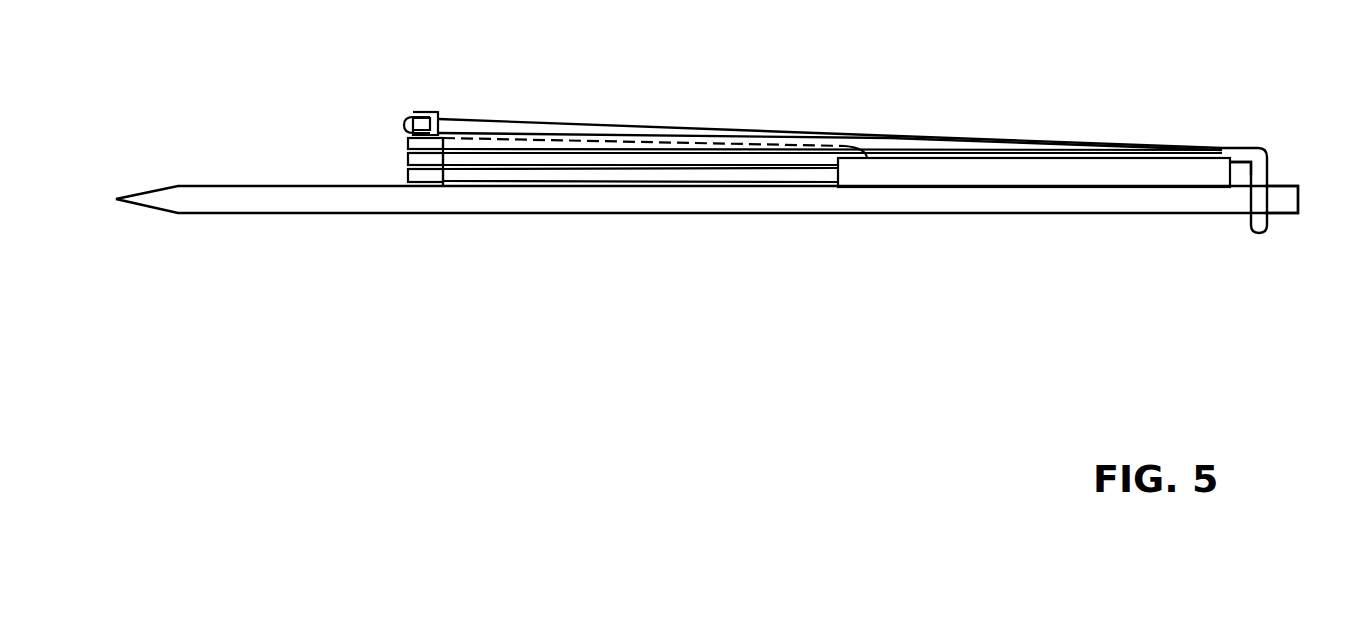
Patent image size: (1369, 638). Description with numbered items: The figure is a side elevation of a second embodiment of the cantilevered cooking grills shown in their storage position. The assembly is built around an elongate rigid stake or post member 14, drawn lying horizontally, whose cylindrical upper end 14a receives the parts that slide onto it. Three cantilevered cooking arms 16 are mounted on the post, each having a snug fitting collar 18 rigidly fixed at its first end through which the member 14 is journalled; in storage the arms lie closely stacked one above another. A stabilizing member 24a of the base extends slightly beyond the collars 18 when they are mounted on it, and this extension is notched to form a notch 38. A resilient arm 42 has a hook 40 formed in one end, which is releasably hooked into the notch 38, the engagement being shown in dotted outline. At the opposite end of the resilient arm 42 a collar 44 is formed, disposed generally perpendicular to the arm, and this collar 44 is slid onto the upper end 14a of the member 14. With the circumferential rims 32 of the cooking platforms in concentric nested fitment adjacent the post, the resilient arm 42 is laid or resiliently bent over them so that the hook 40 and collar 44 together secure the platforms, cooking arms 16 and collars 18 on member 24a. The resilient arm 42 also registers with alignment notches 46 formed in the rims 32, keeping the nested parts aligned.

The elongate member 14 is at (1005, 222).
The upper end of elongate member 14a is at (1288, 218).
The cantilevered cooking arms 16 is at (583, 176).
The collar 18 is at (408, 158).
The stabilizing member 24a is at (432, 108).
The circumferential rims 32 is at (1200, 150).
The notch 38 is at (404, 118).
The hook 40 is at (406, 121).
The resilient arm 42 is at (608, 122).
The collar 44 is at (1270, 152).
The alignment notches 46 is at (1236, 166).